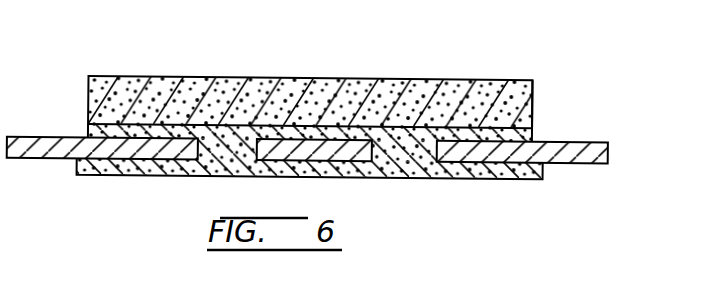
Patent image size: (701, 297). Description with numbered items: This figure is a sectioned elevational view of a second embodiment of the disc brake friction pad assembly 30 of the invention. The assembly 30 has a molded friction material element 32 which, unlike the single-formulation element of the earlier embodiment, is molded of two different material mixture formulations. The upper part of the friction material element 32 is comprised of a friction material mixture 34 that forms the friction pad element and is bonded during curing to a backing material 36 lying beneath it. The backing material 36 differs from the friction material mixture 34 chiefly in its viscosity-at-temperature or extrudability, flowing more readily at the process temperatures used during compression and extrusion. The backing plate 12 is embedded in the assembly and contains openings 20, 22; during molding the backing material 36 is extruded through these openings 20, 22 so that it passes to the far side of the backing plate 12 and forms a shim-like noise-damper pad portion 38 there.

The disc brake friction pad assembly 30 is at (485, 56).
The friction material mixture 34 is at (427, 80).
The friction material element 32 is at (532, 96).
The backing material 36 is at (89, 133).
The shim-like noise-damper pad portion 38 is at (100, 177).
The backing plate 12 is at (607, 159).
The opening 20 is at (207, 152).
The opening 22 is at (390, 150).